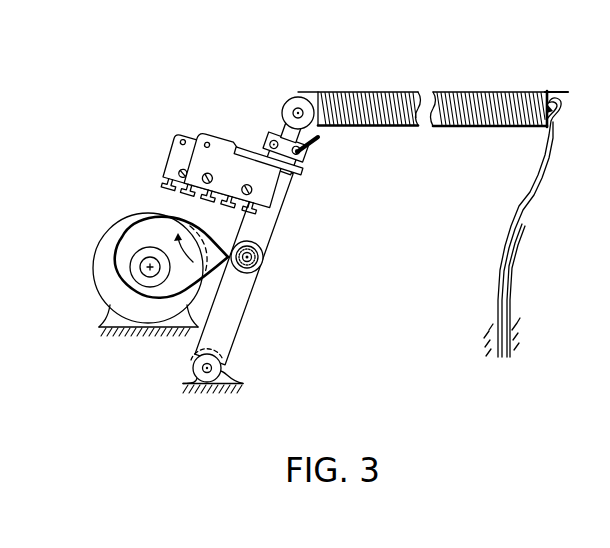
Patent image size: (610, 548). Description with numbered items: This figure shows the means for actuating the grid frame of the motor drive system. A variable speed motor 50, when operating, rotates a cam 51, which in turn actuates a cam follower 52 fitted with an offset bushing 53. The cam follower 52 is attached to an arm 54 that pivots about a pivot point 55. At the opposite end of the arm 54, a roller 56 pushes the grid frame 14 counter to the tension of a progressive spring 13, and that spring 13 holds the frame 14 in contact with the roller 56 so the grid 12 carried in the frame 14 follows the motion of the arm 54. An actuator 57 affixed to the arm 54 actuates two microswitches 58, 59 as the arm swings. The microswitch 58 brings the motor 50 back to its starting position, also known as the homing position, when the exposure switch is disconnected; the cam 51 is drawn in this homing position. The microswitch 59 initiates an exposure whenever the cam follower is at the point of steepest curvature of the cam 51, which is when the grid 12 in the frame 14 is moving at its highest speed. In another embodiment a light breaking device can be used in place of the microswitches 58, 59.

The grid 12 is at (358, 92).
The progressive spring 13 is at (512, 265).
The grid frame 14 is at (558, 91).
The variable speed motor 50 is at (117, 290).
The cam 51 is at (132, 240).
The cam follower 52 is at (261, 258).
The offset bushing 53 is at (250, 266).
The arm 54 is at (268, 218).
The pivot point 55 is at (225, 360).
The roller 56 is at (292, 97).
The actuator 57 is at (315, 147).
The microswitch 58 is at (217, 153).
The microswitch 59 is at (177, 160).